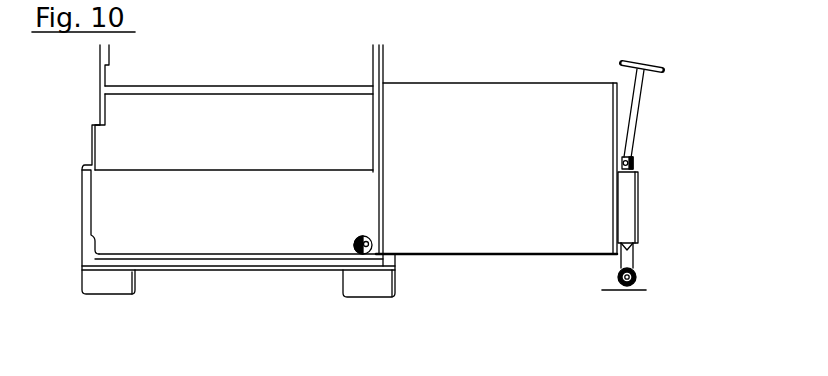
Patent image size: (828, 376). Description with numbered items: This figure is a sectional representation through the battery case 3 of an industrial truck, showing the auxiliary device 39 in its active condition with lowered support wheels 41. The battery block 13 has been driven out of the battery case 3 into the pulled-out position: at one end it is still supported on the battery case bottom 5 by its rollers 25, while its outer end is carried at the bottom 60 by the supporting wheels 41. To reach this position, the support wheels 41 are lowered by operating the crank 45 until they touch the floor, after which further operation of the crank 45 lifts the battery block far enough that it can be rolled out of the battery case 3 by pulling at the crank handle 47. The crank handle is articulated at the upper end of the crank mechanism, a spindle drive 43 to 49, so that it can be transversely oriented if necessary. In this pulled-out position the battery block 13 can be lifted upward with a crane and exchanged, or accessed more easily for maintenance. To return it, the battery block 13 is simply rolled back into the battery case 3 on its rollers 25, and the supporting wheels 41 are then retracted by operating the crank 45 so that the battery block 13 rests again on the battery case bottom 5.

The battery case 3 is at (241, 150).
The battery case bottom 5 is at (296, 256).
The battery block 13 is at (538, 106).
The rollers 25 is at (358, 238).
The auxiliary device 39 is at (645, 224).
The support wheels 41 is at (637, 275).
The crank mechanism (spindle drive) 43 is at (623, 207).
The crank 45 is at (640, 118).
The crank handle 47 is at (634, 57).
The crank mechanism (spindle drive) 49 is at (633, 162).
The bottom 60 is at (602, 295).